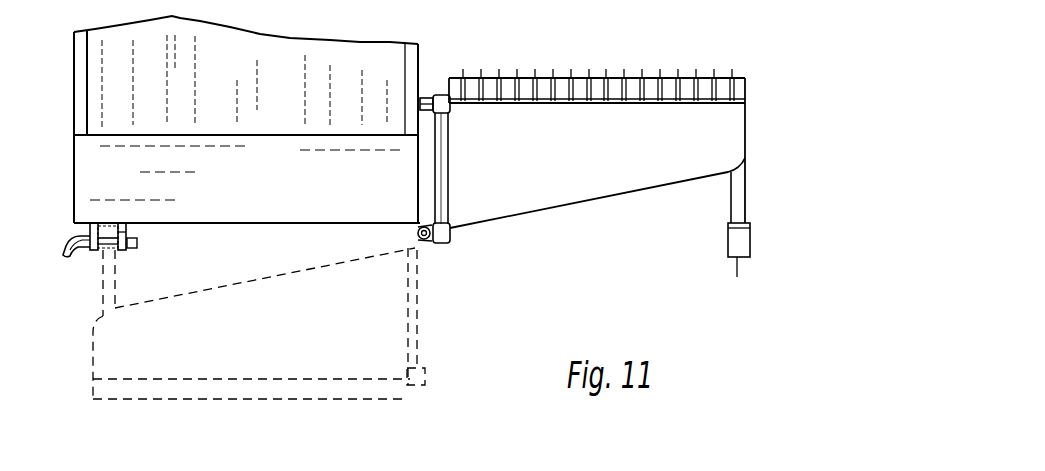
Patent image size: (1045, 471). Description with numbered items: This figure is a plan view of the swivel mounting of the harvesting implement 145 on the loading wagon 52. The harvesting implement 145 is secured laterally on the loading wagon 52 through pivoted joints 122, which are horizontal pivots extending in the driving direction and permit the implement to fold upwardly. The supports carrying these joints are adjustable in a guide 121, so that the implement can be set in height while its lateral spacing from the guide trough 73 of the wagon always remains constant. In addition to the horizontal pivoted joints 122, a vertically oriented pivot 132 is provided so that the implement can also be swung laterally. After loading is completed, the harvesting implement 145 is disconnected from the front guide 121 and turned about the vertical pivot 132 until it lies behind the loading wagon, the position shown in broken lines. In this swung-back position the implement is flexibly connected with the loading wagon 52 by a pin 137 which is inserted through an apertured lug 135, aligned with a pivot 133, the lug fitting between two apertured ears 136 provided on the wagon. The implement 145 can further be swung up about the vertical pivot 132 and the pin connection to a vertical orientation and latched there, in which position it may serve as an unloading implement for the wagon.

The loading wagon 52 is at (246, 119).
The guide trough 73 is at (247, 184).
The guide 121 is at (421, 97).
The pivoted joint 122 is at (450, 97).
The harvesting implement 145 is at (633, 66).
The apertured ears 136 is at (127, 229).
The pin 137 is at (110, 246).
The apertured lug 135 is at (110, 250).
The vertical pivot 132 is at (428, 243).
The pivot 133 is at (440, 245).